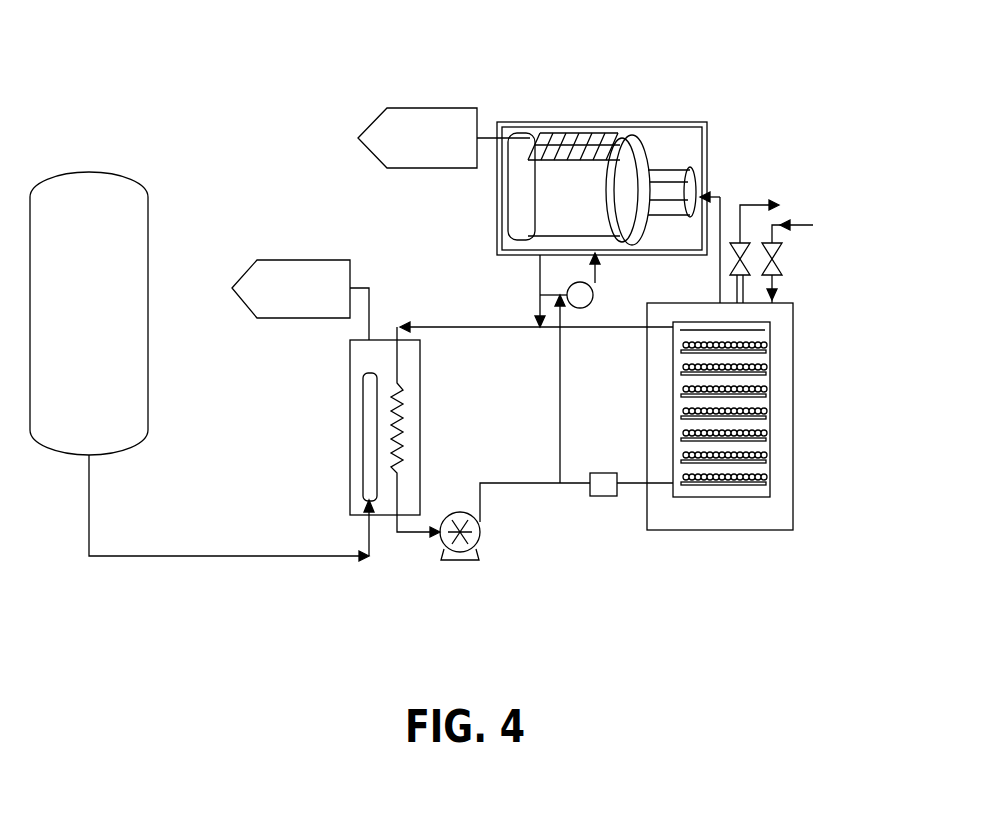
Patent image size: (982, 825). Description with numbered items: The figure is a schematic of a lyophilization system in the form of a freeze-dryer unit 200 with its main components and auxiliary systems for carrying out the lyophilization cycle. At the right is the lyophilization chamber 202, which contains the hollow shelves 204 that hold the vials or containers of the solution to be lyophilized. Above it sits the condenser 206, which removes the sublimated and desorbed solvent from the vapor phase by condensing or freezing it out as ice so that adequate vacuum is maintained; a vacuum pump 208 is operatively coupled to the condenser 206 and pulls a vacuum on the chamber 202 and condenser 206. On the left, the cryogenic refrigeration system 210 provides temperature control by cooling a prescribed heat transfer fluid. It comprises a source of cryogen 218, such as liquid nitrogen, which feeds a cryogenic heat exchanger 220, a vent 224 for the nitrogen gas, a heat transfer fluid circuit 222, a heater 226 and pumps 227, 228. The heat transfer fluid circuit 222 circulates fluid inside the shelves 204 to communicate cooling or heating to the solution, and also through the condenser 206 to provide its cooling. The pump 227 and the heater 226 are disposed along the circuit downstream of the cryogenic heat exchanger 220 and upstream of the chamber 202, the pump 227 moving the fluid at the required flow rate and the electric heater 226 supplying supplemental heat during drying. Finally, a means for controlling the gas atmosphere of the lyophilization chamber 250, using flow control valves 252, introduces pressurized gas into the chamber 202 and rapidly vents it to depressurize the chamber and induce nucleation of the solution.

The freeze-dryer unit 200 is at (392, 74).
The lyophilization chamber 202 is at (795, 510).
The shelves 204 is at (673, 433).
The condenser 206 is at (582, 160).
The vacuum pump 208 is at (690, 162).
The cryogenic refrigeration system 210 is at (303, 235).
The source of cryogen 218 is at (138, 205).
The cryogenic heat exchanger 220 is at (350, 355).
The heat transfer fluid circuit 222 is at (502, 330).
The vent 224 is at (338, 262).
The heater 226 is at (618, 497).
The pump 227 is at (440, 558).
The pump 228 is at (600, 297).
The means for controlling the gas atmosphere of the lyophilization chamber 250 is at (811, 300).
The flow control valves 252 is at (750, 266).